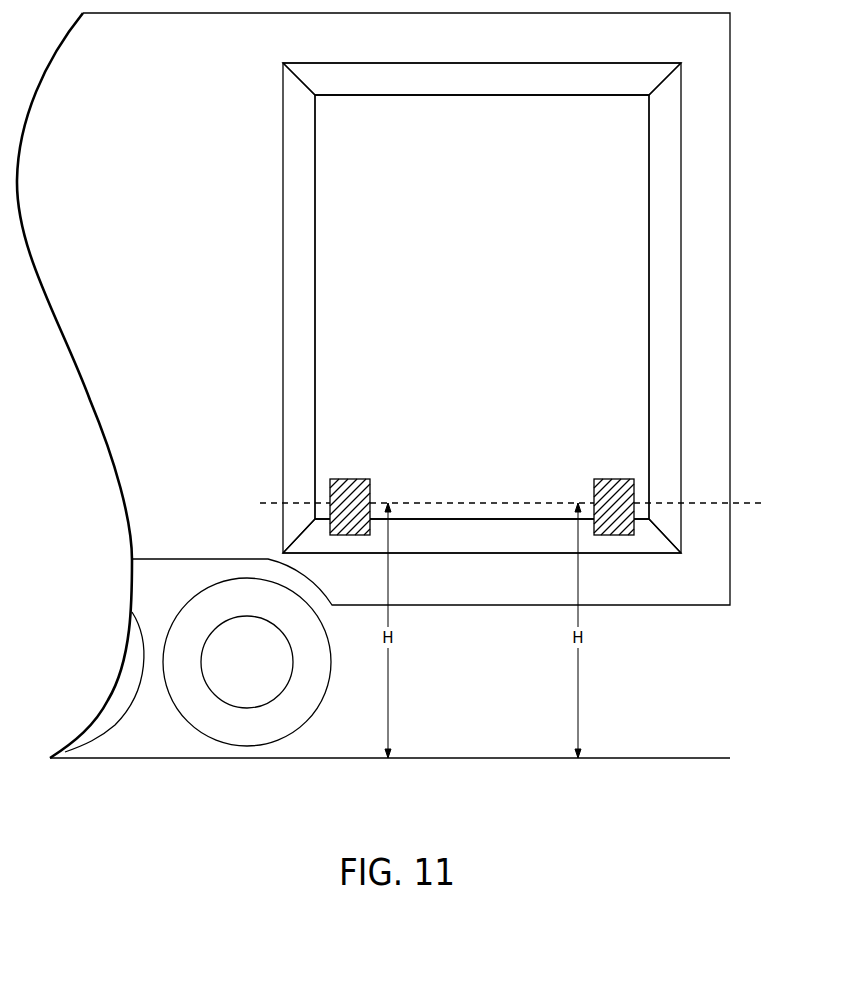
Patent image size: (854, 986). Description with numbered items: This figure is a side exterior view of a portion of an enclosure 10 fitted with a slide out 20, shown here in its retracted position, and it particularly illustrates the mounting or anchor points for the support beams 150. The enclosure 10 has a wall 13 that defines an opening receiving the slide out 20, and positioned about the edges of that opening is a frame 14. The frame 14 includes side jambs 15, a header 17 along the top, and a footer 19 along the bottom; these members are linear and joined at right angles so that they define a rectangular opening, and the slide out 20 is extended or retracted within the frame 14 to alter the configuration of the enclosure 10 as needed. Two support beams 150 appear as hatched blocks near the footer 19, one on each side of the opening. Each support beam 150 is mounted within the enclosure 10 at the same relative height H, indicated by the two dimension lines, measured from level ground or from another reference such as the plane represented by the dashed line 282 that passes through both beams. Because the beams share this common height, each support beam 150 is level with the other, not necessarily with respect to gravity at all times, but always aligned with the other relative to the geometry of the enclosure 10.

The enclosure 10 is at (390, 385).
The wall 13 is at (80, 385).
The frame 14 is at (482, 308).
The side jambs 15 is at (468, 307).
The header 17 is at (482, 79).
The footer 19 is at (482, 536).
The slide out 20 is at (482, 307).
The support beam 150 is at (330, 492).
The dashed line 282 is at (745, 505).